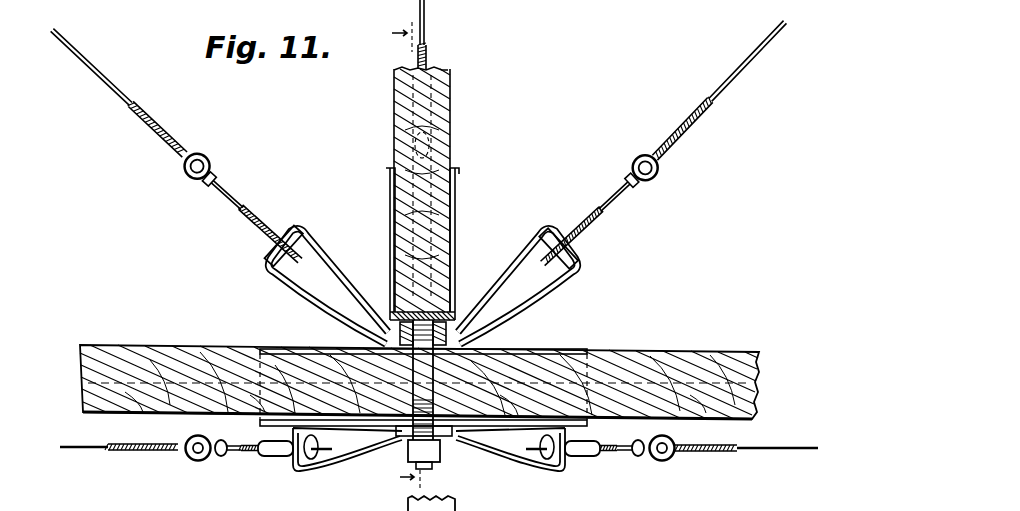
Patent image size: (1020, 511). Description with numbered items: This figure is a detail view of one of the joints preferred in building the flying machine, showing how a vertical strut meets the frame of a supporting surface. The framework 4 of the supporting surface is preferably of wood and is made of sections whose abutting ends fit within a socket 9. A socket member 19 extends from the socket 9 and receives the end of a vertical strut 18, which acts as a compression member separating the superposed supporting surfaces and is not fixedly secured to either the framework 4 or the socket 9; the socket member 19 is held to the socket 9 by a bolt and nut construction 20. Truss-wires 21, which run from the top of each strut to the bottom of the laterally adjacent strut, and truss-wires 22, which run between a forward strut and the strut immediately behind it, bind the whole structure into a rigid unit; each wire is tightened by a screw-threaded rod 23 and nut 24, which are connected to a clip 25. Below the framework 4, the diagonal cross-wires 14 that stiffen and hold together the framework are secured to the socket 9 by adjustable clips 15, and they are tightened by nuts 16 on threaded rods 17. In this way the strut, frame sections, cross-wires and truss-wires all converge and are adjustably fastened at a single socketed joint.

The framework 4 is at (177, 358).
The socket 9 is at (545, 352).
The diagonal cross-wire 14 is at (83, 452).
The adjustable clip 15 is at (365, 448).
The nut 16 is at (293, 477).
The threaded rod 17 is at (237, 450).
The vertical strut 18 is at (440, 117).
The socket member 19 is at (448, 222).
The bolt and nut construction 20 is at (388, 312).
The truss-wire 21 is at (83, 64).
The truss-wire 22 is at (424, 48).
The screw-threaded rod 23 is at (233, 197).
The nut 24 is at (278, 223).
The clip 25 is at (312, 298).